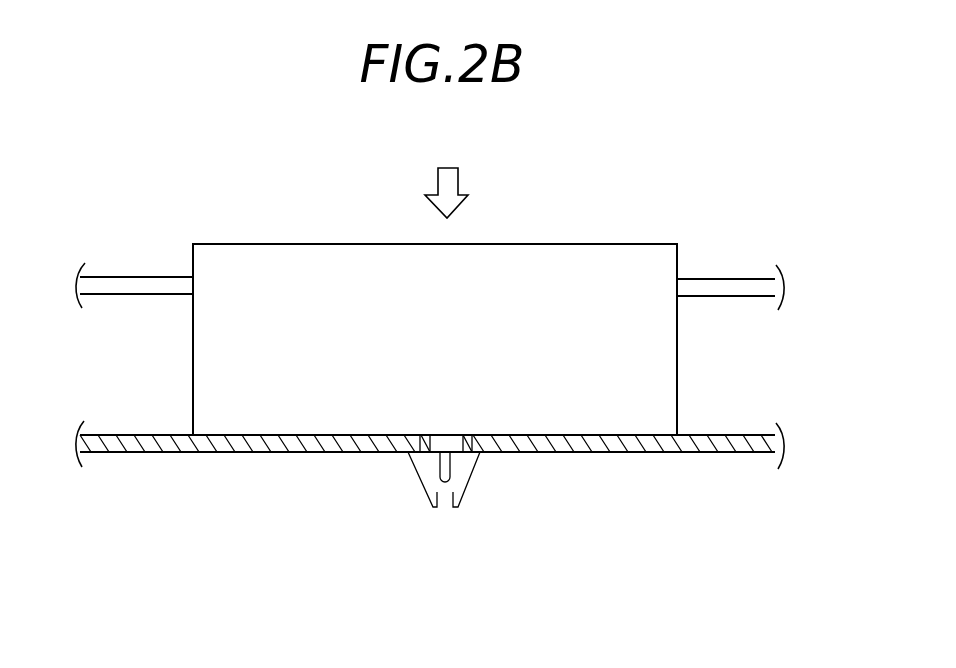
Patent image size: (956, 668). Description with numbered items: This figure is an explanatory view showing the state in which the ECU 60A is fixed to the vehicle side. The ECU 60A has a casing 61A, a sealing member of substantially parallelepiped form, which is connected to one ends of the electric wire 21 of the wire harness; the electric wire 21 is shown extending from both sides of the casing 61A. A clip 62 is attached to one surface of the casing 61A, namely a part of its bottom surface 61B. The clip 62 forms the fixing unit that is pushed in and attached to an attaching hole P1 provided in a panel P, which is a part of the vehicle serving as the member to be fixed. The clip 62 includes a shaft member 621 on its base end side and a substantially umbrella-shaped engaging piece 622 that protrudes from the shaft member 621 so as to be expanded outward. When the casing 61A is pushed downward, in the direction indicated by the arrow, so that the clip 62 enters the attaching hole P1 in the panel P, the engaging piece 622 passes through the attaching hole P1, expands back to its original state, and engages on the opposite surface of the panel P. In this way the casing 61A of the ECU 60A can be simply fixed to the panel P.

The ECU 60A is at (430, 261).
The casing 61A is at (618, 258).
The bottom surface 61B is at (236, 443).
The electric wire 21 is at (125, 277).
The clip 62 is at (511, 483).
The shaft member 621 is at (450, 442).
The engaging piece 622 is at (435, 508).
The panel P is at (725, 455).
The attaching hole P1 is at (439, 435).